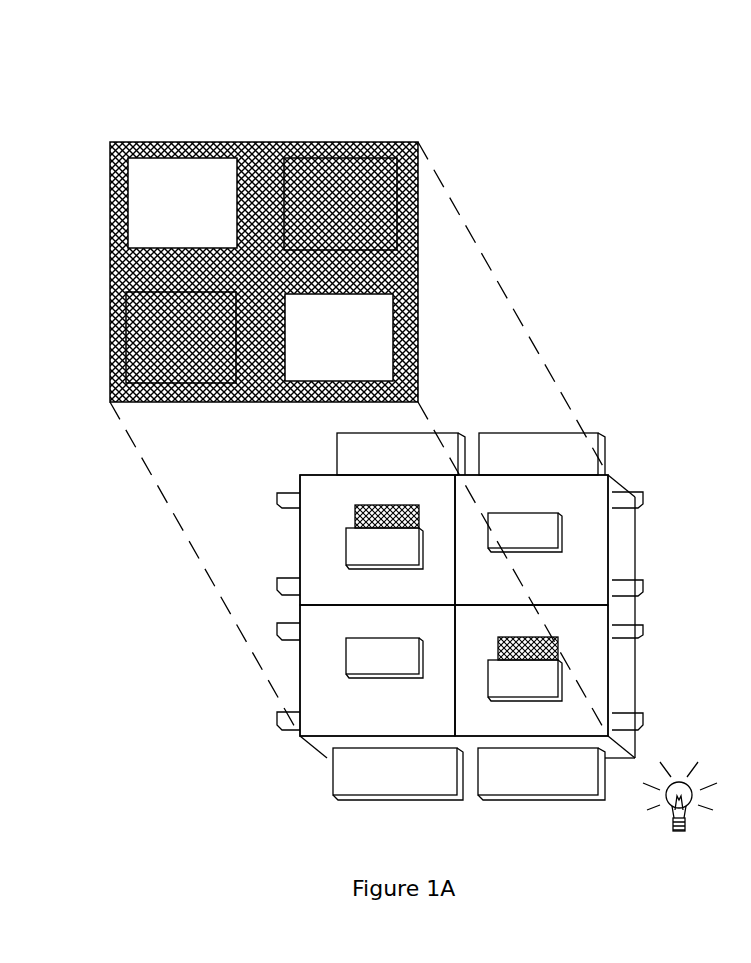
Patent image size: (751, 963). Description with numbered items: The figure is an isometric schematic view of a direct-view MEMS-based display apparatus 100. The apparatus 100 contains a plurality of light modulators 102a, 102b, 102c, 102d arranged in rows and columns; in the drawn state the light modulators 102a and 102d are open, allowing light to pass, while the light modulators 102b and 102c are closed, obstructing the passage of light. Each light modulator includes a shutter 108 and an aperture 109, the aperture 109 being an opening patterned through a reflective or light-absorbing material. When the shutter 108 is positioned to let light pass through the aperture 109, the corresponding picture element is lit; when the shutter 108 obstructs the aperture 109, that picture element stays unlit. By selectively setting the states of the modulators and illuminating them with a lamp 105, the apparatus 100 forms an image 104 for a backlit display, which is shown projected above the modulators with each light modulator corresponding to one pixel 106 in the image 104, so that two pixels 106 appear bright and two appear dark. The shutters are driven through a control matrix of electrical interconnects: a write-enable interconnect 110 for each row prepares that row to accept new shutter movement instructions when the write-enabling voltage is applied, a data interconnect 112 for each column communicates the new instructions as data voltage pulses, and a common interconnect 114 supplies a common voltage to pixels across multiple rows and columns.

The display apparatus 100 is at (587, 377).
The light modulator 102a is at (346, 594).
The light modulator 102b is at (595, 586).
The light modulator 102c is at (345, 724).
The light modulator 102d is at (502, 724).
The image 104 is at (278, 97).
The lamp 105 is at (660, 828).
The pixel 106 is at (175, 160).
The shutter 108 is at (400, 556).
The aperture 109 is at (366, 511).
The write-enable interconnect 110 is at (280, 498).
The data interconnect 112 is at (533, 433).
The common interconnect 114 is at (280, 580).